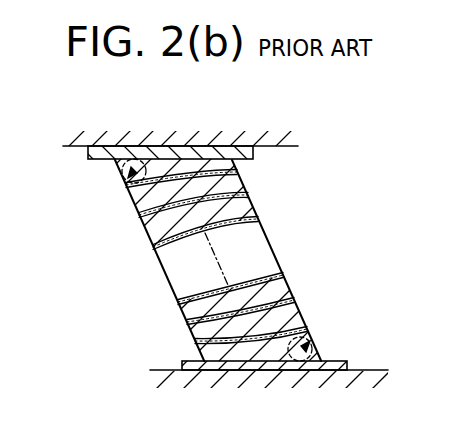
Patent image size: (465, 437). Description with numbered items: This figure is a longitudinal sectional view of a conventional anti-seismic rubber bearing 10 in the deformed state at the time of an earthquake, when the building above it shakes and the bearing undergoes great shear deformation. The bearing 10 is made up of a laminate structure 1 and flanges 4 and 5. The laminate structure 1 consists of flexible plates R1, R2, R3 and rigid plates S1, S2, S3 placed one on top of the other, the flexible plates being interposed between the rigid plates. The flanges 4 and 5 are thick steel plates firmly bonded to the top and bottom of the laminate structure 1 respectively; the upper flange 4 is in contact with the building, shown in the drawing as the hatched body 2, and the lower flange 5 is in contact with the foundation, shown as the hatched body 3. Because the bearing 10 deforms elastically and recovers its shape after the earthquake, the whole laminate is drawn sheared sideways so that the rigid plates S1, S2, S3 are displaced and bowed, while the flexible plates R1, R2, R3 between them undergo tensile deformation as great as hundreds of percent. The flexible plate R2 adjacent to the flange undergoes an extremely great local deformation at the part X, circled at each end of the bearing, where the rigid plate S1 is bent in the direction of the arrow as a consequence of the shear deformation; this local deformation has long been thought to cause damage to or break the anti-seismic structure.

The laminate structure 1 is at (272, 249).
The upper structure 2 is at (268, 137).
The lower structure (foundation) 3 is at (353, 382).
The flange 4 is at (253, 157).
The flange 5 is at (348, 367).
The anti-seismic rubber bearing 10 is at (272, 222).
The flexible plate R1 is at (232, 250).
The flexible plate R2 is at (232, 250).
The flexible plate R3 is at (232, 250).
The rigid plate S1 is at (124, 187).
The rigid plate S2 is at (138, 216).
The rigid plate S3 is at (152, 248).
The part of local deformation X is at (123, 180).